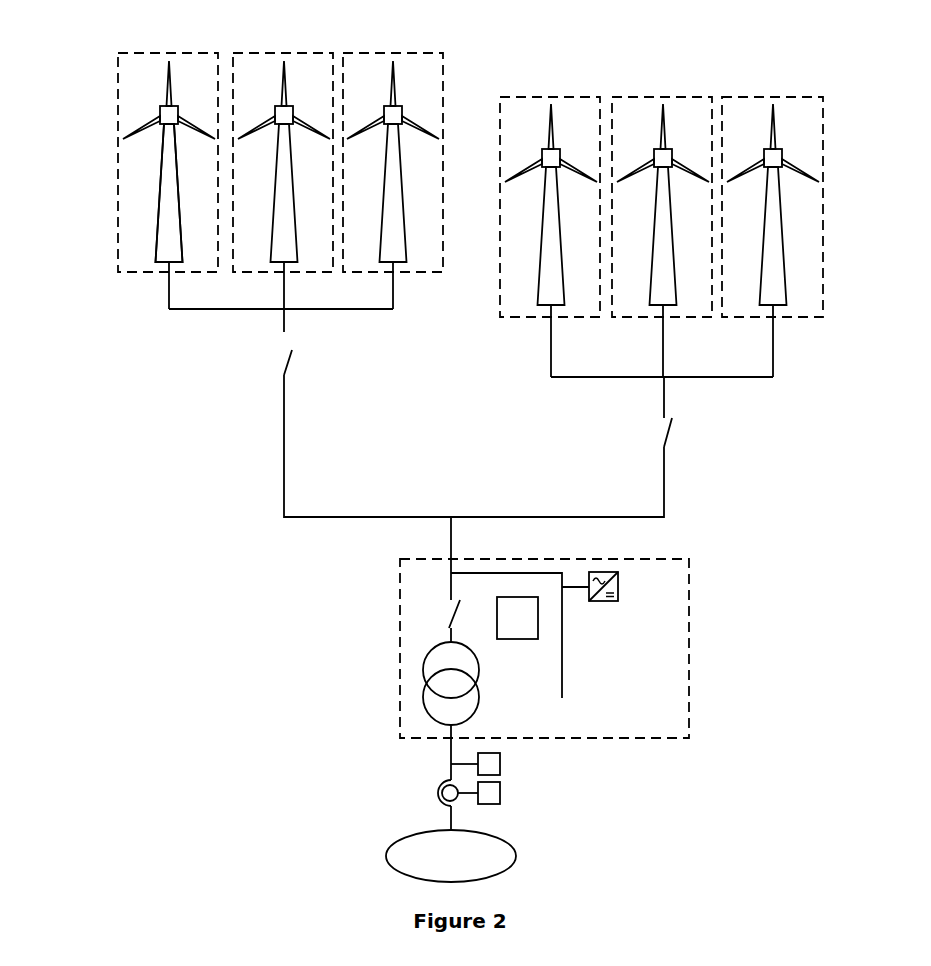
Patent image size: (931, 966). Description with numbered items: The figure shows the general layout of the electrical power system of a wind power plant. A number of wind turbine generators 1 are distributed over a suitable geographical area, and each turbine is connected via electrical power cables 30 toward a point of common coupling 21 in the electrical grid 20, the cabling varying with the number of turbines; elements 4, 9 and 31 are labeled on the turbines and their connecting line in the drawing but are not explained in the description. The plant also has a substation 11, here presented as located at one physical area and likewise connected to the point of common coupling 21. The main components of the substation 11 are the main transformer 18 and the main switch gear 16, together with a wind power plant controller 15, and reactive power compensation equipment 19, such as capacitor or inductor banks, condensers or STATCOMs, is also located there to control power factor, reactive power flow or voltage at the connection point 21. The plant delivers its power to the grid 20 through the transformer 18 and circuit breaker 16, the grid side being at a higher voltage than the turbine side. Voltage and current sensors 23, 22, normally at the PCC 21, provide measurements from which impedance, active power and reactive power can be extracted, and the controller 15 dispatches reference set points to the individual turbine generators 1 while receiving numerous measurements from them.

The wind turbine generator 1 is at (118, 112).
The wind turbine 4 is at (167, 85).
The wind turbine tower 9 is at (153, 210).
The electrical power cables 30 is at (170, 295).
The connection line 31 is at (284, 452).
The substation 11 is at (689, 662).
The wind power plant controller 15 is at (502, 588).
The main switch gear 16 is at (447, 612).
The main transformer 18 is at (427, 677).
The reactive power compensation equipment 19 is at (618, 586).
The point of common coupling 21 is at (440, 820).
The current sensor 22 is at (500, 791).
The voltage sensor 23 is at (500, 764).
The electrical grid 20 is at (386, 858).